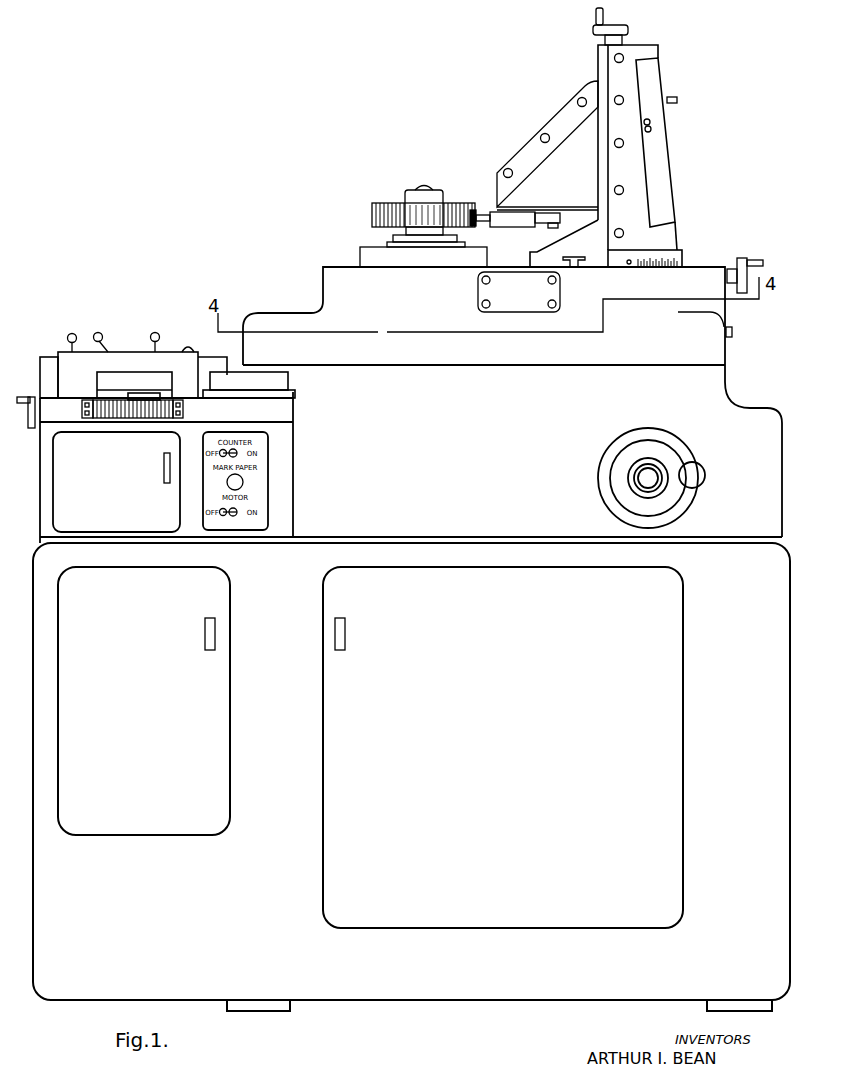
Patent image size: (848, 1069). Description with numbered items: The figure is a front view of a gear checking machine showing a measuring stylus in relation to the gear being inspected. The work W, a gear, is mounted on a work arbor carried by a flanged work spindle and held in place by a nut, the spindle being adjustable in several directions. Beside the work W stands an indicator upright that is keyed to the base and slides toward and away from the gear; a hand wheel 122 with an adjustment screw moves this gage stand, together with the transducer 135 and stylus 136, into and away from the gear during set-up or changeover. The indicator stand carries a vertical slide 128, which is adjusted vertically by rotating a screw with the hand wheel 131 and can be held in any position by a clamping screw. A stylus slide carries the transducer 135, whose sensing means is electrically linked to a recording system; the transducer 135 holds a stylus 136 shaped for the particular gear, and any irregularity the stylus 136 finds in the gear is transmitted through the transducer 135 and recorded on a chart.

The work W is at (372, 209).
The hand wheel 122 is at (746, 254).
The vertical slide 128 is at (537, 164).
The hand wheel 131 is at (629, 31).
The transducer 135 is at (494, 207).
The stylus 136 is at (482, 222).